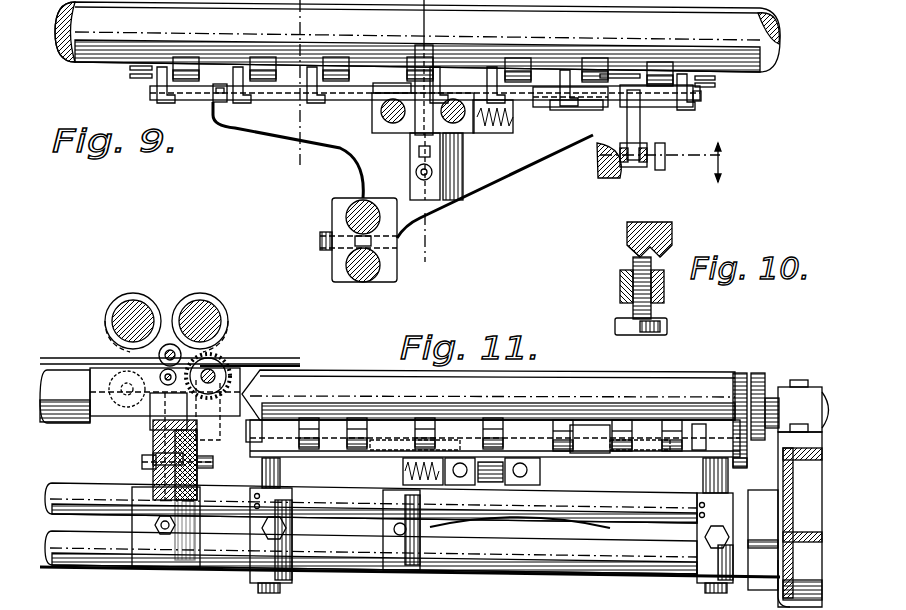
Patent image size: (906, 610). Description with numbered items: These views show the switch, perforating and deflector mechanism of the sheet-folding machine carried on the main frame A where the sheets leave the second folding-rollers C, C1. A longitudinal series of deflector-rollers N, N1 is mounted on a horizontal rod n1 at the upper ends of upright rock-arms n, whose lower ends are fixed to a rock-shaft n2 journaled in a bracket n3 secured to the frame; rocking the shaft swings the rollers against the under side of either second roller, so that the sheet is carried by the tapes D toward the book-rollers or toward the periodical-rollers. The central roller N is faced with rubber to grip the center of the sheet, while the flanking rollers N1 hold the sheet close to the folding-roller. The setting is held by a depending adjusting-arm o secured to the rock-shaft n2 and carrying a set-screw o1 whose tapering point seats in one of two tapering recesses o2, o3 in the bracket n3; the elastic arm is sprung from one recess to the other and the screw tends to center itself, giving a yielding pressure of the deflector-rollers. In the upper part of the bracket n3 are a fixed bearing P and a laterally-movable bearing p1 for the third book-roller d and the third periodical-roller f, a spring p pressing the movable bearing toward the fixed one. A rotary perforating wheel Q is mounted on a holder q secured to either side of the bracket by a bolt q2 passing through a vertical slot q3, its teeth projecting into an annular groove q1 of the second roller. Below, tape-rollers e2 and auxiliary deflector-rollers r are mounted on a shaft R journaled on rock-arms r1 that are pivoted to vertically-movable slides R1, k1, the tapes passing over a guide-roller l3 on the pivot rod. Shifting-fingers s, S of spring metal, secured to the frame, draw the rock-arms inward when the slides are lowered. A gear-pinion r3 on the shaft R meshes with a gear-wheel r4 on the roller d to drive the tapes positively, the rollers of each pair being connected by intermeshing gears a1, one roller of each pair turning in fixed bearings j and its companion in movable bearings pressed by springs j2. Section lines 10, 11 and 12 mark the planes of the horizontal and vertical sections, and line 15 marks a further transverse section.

In FIG. 9, the second folding-roller C is at (774, 30).
In FIG. 11, the second folding-roller C is at (203, 300).
In FIG. 9, the tapes D is at (130, 71).
In FIG. 11, the tapes D is at (170, 353).
In FIG. 9, the upright rock-arms n is at (315, 66).
In FIG. 9, the deflector-rollers N1 is at (262, 57).
In FIG. 9, the central deflector-roller N is at (414, 50).
In FIG. 11, the central deflector-roller N is at (168, 344).
In FIG. 9, the carrier or holder q is at (420, 15).
In FIG. 11, the carrier or holder q is at (198, 435).
In FIG. 9, the horizontal pivot or rod n1 is at (450, 72).
In FIG. 9, the rock-shaft n2 is at (701, 96).
In FIG. 9, the bracket n3 is at (417, 170).
In FIG. 10, the bracket n3 is at (636, 234).
In FIG. 11, the bracket n3 is at (166, 527).
In FIG. 9, the section line 12 is at (318, 158).
In FIG. 9, the fixed bearing P is at (372, 118).
In FIG. 11, the fixed bearing P is at (173, 446).
In FIG. 9, the spring p is at (490, 126).
In FIG. 9, the laterally-movable bearing p1 is at (441, 165).
In FIG. 9, the vertical slot q3 is at (418, 152).
In FIG. 11, the vertical slot q3 is at (142, 460).
In FIG. 9, the bolt q2 is at (416, 173).
In FIG. 11, the bolt q2 is at (213, 464).
In FIG. 9, the adjusting-arm o is at (637, 121).
In FIG. 10, the adjusting-arm o is at (620, 288).
In FIG. 9, the set-screw o1 is at (662, 162).
In FIG. 10, the set-screw o1 is at (659, 295).
In FIG. 10, the tapering socket or recess o2 is at (632, 250).
In FIG. 10, the tapering socket or recess o3 is at (668, 250).
In FIG. 9, the section line 10 is at (650, 170).
In FIG. 9, the section line 11 is at (446, 242).
In FIG. 9, the main frame A is at (358, 252).
In FIG. 11, the main frame A is at (440, 493).
In FIG. 11, the second folding-roller C1 is at (134, 300).
In FIG. 11, the annular groove q1 is at (112, 312).
In FIG. 11, the third periodical folding-roller f is at (140, 395).
In FIG. 11, the rotary perforating wheel Q is at (222, 362).
In FIG. 11, the third book folding-roller d is at (585, 418).
In FIG. 11, the auxiliary deflector or switch rollers r is at (311, 425).
In FIG. 11, the rock-arms r1 is at (257, 420).
In FIG. 11, the tape-rollers e2 is at (410, 422).
In FIG. 11, the horizontal shaft or rod R is at (586, 428).
In FIG. 11, the guide-roller l3 is at (638, 452).
In FIG. 11, the gear-wheel r4 is at (735, 411).
In FIG. 11, the intermeshing gears a1 is at (762, 380).
In FIG. 11, the gear-pinion r3 is at (747, 466).
In FIG. 11, the shifting-finger s is at (700, 480).
In FIG. 11, the shifting-finger S is at (271, 540).
In FIG. 11, the vertically-movable slide R1 is at (282, 470).
In FIG. 11, the springs j2 is at (400, 472).
In FIG. 11, the fixed bearings j is at (471, 471).
In FIG. 11, the vertically-movable slide k1 is at (725, 493).
In FIG. 11, the section line 15 is at (362, 600).